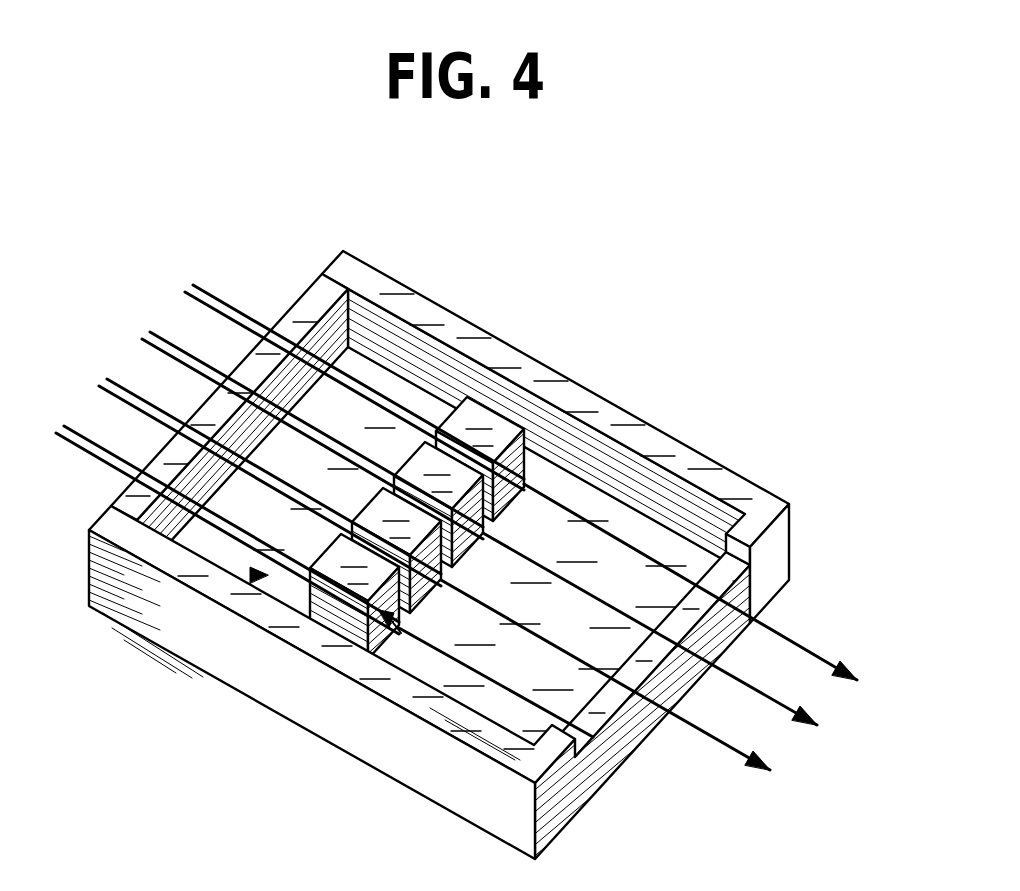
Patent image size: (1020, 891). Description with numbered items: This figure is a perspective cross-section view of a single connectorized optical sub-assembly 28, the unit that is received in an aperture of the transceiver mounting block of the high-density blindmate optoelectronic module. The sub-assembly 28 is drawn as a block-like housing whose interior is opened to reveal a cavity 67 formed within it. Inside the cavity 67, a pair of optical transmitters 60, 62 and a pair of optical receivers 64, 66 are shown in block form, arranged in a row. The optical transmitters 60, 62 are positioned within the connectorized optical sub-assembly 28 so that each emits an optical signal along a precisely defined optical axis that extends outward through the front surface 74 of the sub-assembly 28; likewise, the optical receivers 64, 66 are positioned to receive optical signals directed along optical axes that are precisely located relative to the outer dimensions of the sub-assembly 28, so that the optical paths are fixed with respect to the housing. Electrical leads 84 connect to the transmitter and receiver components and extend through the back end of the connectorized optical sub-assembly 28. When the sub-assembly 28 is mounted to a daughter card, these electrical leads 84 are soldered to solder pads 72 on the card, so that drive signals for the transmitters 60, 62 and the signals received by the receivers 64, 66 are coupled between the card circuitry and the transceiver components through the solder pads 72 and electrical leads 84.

The connectorized optical sub-assembly 28 is at (498, 555).
The optical transmitter 60 is at (485, 437).
The optical transmitter 62 is at (432, 466).
The optical receiver 64 is at (380, 533).
The optical receiver 66 is at (357, 585).
The cavity 67 is at (252, 575).
The solder pads 72 is at (752, 585).
The front surface 74 is at (774, 544).
The electrical leads 84 is at (231, 305).